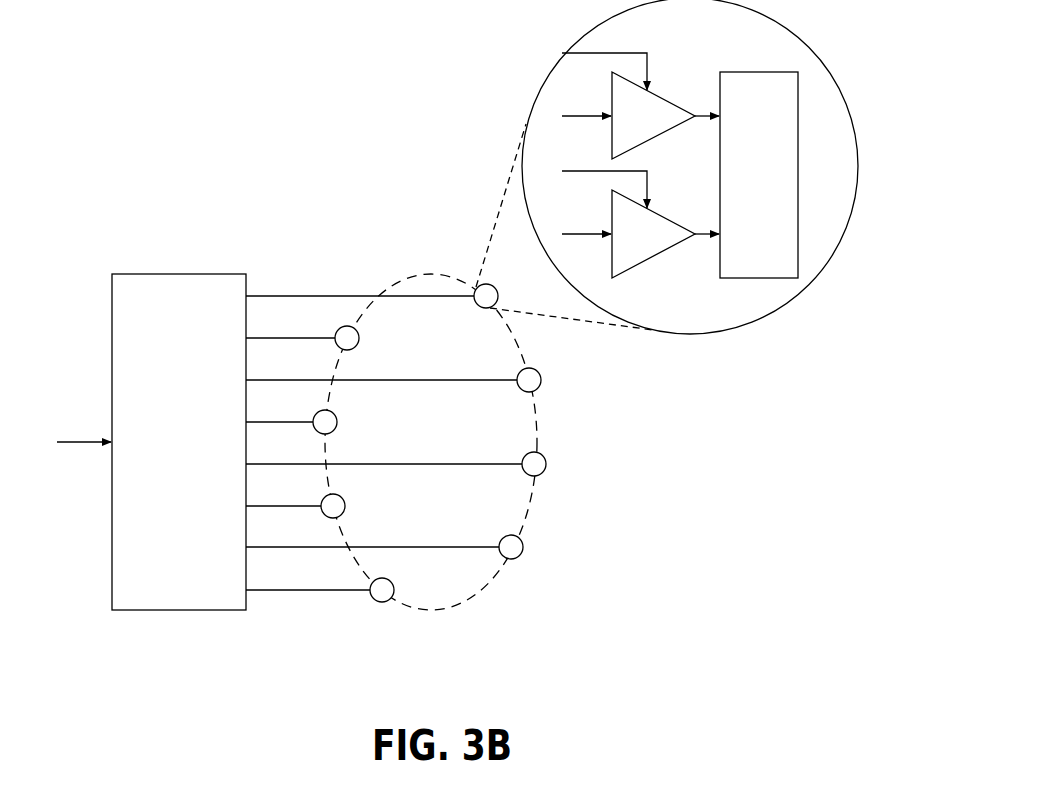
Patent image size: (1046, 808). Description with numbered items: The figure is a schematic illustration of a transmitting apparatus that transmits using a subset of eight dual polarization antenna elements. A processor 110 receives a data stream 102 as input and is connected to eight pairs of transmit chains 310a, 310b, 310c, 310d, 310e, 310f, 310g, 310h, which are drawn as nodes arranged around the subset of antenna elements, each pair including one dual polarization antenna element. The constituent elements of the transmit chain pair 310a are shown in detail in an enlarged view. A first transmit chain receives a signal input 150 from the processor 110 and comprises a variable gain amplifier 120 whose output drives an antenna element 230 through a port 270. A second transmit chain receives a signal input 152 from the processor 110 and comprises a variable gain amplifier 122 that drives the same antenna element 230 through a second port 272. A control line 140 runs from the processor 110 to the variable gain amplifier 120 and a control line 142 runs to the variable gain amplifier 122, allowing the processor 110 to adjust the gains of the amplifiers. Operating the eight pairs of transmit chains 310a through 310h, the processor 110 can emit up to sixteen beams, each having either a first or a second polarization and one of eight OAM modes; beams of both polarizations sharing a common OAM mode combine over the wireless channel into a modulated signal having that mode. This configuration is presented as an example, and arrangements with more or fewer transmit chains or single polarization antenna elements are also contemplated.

The data stream 102 is at (79, 442).
The processor 110 is at (179, 442).
The transmit chain pair 310a is at (500, 287).
The transmit chain pair 310b is at (541, 381).
The transmit chain pair 310c is at (546, 466).
The transmit chain pair 310d is at (520, 556).
The transmit chain pair 310e is at (374, 600).
The transmit chain pair 310f is at (324, 498).
The transmit chain pair 310g is at (318, 412).
The transmit chain pair 310h is at (339, 329).
The variable gain amplifier 120 is at (653, 115).
The variable gain amplifier 122 is at (653, 234).
The control line 140 is at (648, 62).
The control line 142 is at (648, 180).
The signal input 150 is at (582, 115).
The signal input 152 is at (582, 234).
The antenna element 230 is at (759, 175).
The port 270 is at (722, 119).
The port 272 is at (722, 237).